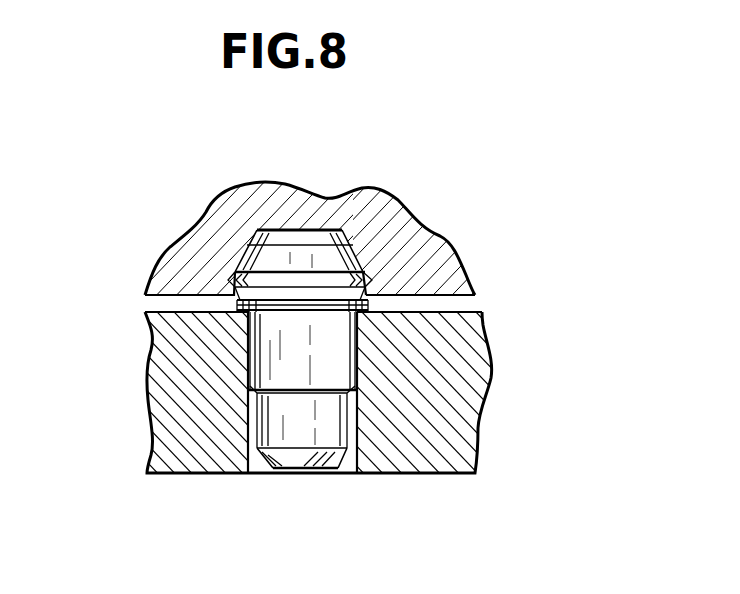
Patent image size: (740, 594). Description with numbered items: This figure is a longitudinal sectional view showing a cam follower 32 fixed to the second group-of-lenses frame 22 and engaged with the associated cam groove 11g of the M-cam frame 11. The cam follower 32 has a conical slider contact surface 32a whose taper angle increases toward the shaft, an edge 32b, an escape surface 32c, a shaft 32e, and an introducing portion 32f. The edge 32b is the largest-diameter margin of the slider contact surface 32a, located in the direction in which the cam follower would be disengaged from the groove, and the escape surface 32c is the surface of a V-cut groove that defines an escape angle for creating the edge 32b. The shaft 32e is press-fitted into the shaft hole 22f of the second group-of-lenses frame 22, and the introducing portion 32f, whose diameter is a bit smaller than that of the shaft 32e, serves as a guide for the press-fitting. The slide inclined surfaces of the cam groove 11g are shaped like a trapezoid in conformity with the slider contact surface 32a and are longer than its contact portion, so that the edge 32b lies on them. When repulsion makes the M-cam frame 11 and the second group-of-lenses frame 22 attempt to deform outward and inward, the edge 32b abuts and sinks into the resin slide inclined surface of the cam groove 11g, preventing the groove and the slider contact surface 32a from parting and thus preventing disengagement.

The M-cam frame 11 is at (432, 250).
The cam groove 11g is at (378, 283).
The second group-of-lenses frame 22 is at (450, 366).
The shaft hole 22f is at (350, 458).
The cam follower 32 is at (406, 334).
The conical slider contact surface 32a is at (363, 270).
The edge 32b is at (366, 273).
The escape surface 32c is at (372, 283).
The shaft 32e is at (362, 365).
The introducing portion 32f is at (352, 423).